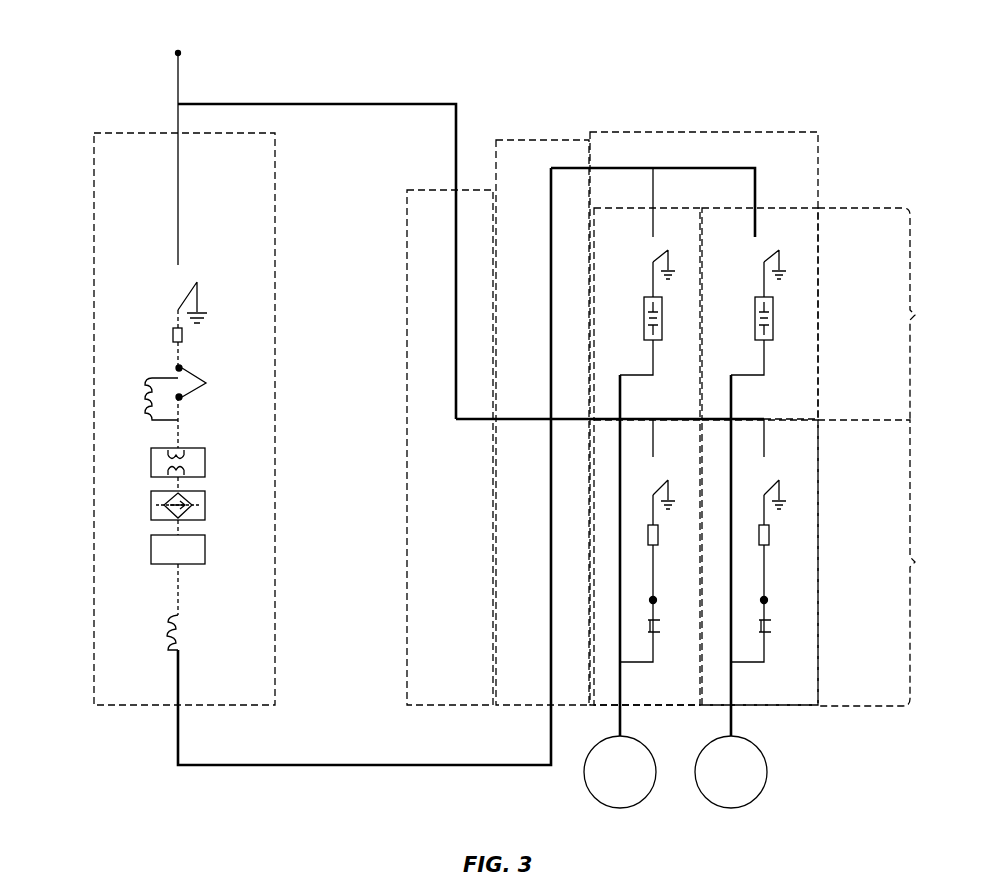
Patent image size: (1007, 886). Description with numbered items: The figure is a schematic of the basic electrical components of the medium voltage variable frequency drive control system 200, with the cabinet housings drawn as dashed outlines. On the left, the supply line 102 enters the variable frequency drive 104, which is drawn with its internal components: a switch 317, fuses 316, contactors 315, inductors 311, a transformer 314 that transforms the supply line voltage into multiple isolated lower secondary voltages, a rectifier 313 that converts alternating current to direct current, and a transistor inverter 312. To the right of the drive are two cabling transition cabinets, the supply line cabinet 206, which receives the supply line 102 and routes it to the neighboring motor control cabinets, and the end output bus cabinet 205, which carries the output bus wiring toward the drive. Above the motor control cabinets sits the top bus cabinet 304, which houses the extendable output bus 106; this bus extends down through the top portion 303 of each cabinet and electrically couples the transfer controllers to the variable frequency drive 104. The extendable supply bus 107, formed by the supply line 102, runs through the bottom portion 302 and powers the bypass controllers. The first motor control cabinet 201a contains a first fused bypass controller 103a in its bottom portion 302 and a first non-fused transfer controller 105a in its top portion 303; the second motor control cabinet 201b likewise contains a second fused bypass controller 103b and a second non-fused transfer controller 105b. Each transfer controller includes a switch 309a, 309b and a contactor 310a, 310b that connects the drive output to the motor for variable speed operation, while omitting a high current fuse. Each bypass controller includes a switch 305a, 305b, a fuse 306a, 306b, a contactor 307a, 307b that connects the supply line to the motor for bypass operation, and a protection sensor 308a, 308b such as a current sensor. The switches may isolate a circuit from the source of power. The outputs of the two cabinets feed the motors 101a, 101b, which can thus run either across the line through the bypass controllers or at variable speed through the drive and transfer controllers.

The drive control system 200 is at (146, 44).
The supply line 102 is at (316, 104).
The variable frequency drive 104 is at (94, 148).
The switch 317 is at (183, 295).
The fuses 316 is at (173, 336).
The contactors 315 is at (206, 383).
The inductors 311 is at (148, 400).
The transformer 314 is at (205, 466).
The rectifier 313 is at (205, 505).
The transistor inverter 312 is at (205, 547).
The supply line cabinet 206 is at (410, 190).
The end output bus cabinet 205 is at (540, 140).
The top bus cabinet 304 is at (700, 132).
The extendable output bus 106 is at (748, 168).
The extendable supply bus 107 is at (748, 419).
The top portion 303 is at (889, 314).
The bottom portion 302 is at (889, 563).
The first non-fused transfer controller 105a is at (598, 344).
The second non-fused transfer controller 105b is at (818, 340).
The first fused bypass controller 103a is at (598, 456).
The second fused bypass controller 103b is at (818, 462).
The switch 309a is at (658, 262).
The switch 309b is at (770, 262).
The contactor 310a is at (644, 320).
The contactor 310b is at (755, 320).
The switch 305a is at (658, 488).
The switch 305b is at (770, 488).
The fuse 306a is at (648, 535).
The fuse 306b is at (769, 535).
The contactor 307a is at (649, 598).
The contactor 307b is at (768, 598).
The protection sensor 308a is at (649, 624).
The protection sensor 308b is at (768, 638).
The first motor control cabinet 201a is at (636, 708).
The second motor control cabinet 201b is at (758, 708).
The motor 101a is at (644, 784).
The motor 101b is at (755, 784).